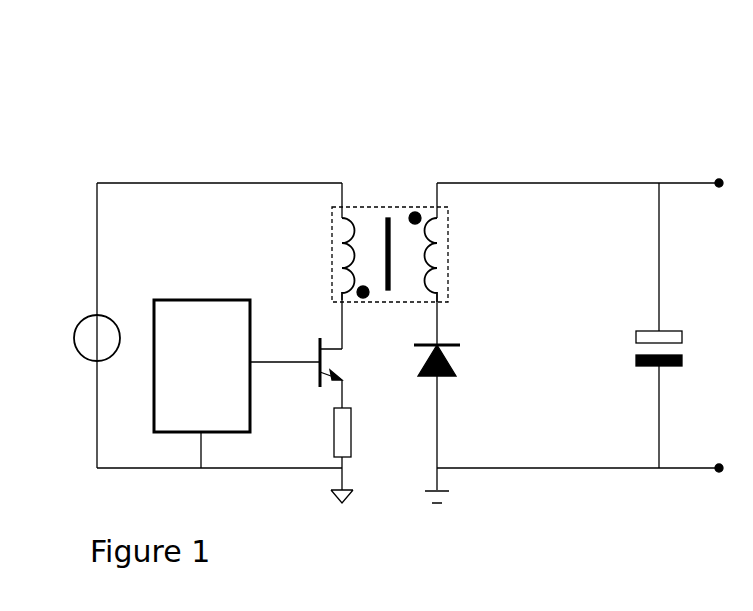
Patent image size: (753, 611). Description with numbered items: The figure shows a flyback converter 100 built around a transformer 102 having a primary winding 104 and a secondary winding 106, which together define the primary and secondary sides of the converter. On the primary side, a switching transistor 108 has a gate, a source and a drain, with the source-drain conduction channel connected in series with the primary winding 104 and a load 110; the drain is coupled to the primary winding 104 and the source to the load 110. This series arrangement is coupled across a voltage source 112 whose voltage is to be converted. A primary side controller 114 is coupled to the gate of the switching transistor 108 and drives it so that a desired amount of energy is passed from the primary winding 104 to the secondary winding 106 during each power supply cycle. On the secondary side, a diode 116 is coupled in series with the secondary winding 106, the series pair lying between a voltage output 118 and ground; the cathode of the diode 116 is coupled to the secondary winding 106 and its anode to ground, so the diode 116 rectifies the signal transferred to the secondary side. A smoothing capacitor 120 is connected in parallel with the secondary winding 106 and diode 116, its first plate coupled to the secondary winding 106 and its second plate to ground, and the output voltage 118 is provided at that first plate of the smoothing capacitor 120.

The flyback converter 100 is at (57, 118).
The transformer 102 is at (397, 206).
The primary winding 104 is at (347, 220).
The secondary winding 106 is at (435, 212).
The switching transistor 108 is at (319, 341).
The load 110 is at (352, 428).
The voltage source 112 is at (75, 333).
The primary side controller 114 is at (217, 300).
The diode 116 is at (445, 378).
The voltage output 118 is at (718, 181).
The smoothing capacitor 120 is at (660, 367).